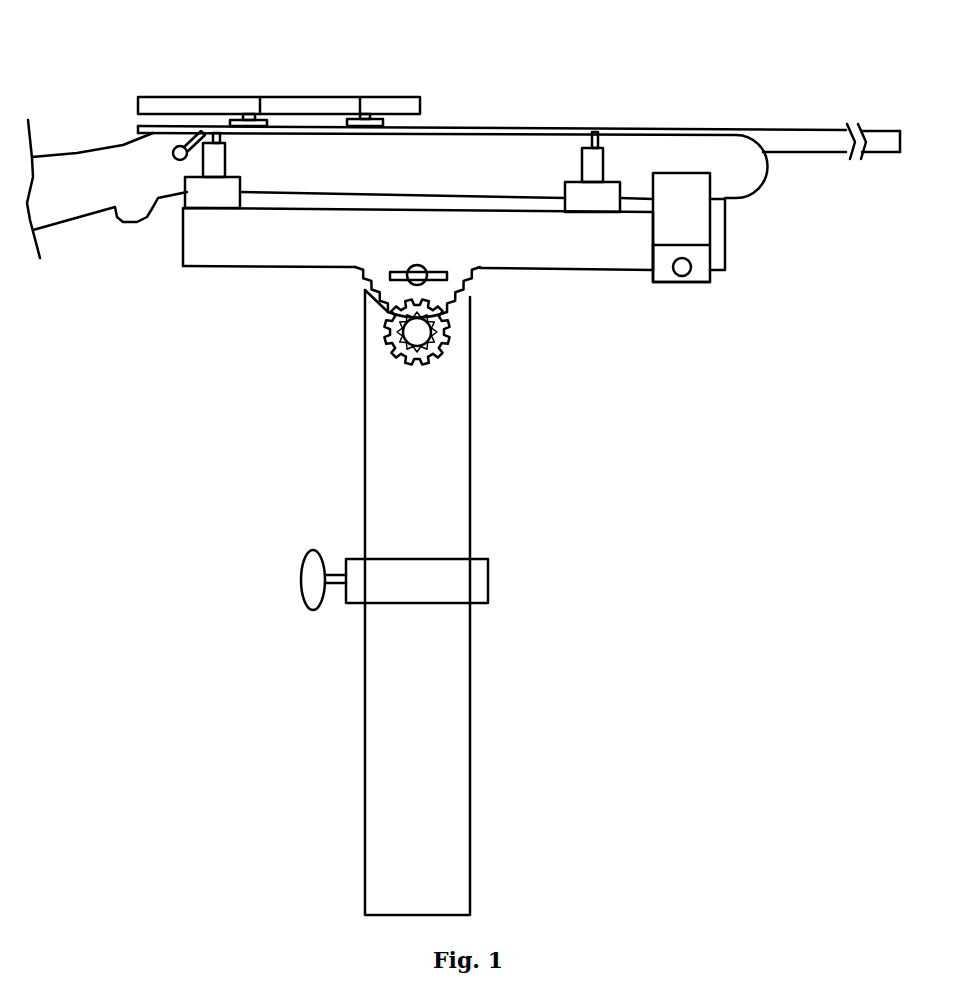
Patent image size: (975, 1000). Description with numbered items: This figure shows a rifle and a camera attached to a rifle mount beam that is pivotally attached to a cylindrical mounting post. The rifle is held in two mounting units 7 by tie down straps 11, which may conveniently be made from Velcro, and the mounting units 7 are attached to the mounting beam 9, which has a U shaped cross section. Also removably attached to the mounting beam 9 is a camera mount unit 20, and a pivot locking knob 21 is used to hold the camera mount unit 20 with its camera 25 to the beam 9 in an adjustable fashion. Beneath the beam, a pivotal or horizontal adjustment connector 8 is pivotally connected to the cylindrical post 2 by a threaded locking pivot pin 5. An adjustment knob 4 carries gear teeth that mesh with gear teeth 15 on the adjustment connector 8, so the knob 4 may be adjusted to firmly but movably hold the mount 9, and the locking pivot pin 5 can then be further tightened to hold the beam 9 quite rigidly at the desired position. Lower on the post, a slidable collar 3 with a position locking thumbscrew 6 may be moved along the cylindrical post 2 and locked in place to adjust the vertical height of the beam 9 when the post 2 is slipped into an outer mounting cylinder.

The cylindrical mounting post 2 is at (470, 655).
The slidable collar 3 is at (365, 592).
The adjustment knob 4 is at (427, 345).
The threaded locking pivot pin 5 is at (425, 282).
The position locking thumbscrew 6 is at (308, 605).
The mounting unit 7 is at (215, 168).
The adjustment connector 8 is at (370, 270).
The mounting beam 9 is at (290, 237).
The tie down straps 11 is at (214, 140).
The gear teeth 15 is at (385, 307).
The camera mount unit 20 is at (683, 268).
The pivot locking knob 21 is at (682, 282).
The camera 25 is at (717, 232).